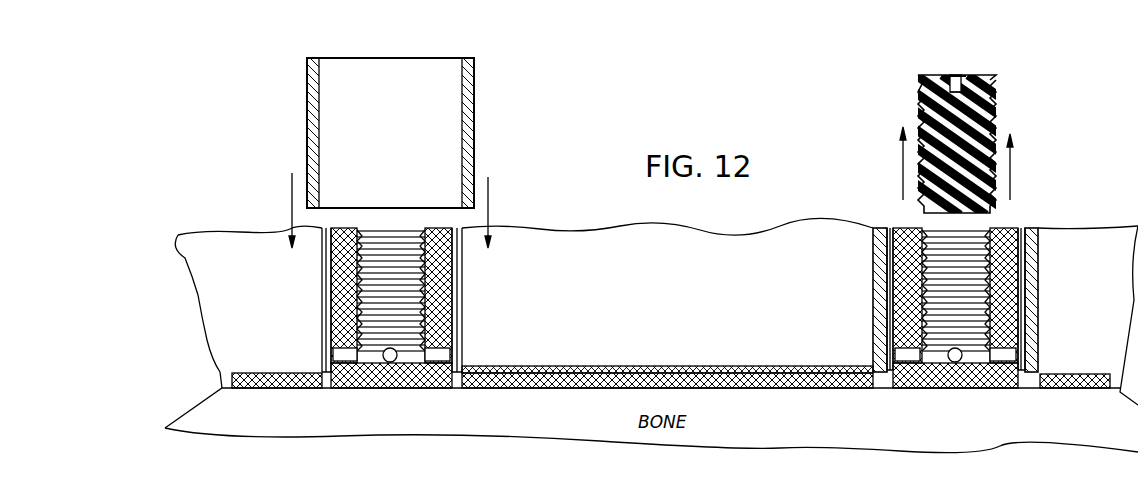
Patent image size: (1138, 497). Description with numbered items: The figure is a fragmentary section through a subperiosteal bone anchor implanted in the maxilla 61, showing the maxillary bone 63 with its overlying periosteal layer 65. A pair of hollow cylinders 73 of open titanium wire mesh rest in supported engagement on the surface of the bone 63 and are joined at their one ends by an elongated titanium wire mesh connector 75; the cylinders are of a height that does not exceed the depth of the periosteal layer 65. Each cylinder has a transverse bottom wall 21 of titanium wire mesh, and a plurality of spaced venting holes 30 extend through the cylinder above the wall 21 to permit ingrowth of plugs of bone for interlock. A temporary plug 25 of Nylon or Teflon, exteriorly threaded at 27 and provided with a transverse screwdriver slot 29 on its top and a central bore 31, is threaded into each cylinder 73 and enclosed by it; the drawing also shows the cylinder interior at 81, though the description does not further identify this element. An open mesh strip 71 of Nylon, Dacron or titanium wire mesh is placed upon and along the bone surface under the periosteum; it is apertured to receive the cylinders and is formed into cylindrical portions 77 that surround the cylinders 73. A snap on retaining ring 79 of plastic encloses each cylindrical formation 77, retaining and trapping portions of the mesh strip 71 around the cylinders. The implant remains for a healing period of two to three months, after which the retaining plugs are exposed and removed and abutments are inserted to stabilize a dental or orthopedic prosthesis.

The transverse bottom wall 21 is at (412, 378).
The plug 25 is at (965, 76).
The exterior threads 27 is at (992, 126).
The screwdriver slot 29 is at (948, 76).
The venting holes 30 is at (333, 352).
The central bore 31 is at (950, 92).
The maxilla 61 is at (261, 232).
The maxillary bone 63 is at (236, 418).
The periosteal layer 65 is at (300, 378).
The open mesh strip 71 is at (266, 372).
The wire mesh cylinders 73 is at (458, 288).
The wire mesh connector 75 is at (765, 366).
The cylindrical portions 77 is at (463, 318).
The snap on retaining ring 79 is at (470, 110).
The internal threads 81 is at (380, 240).